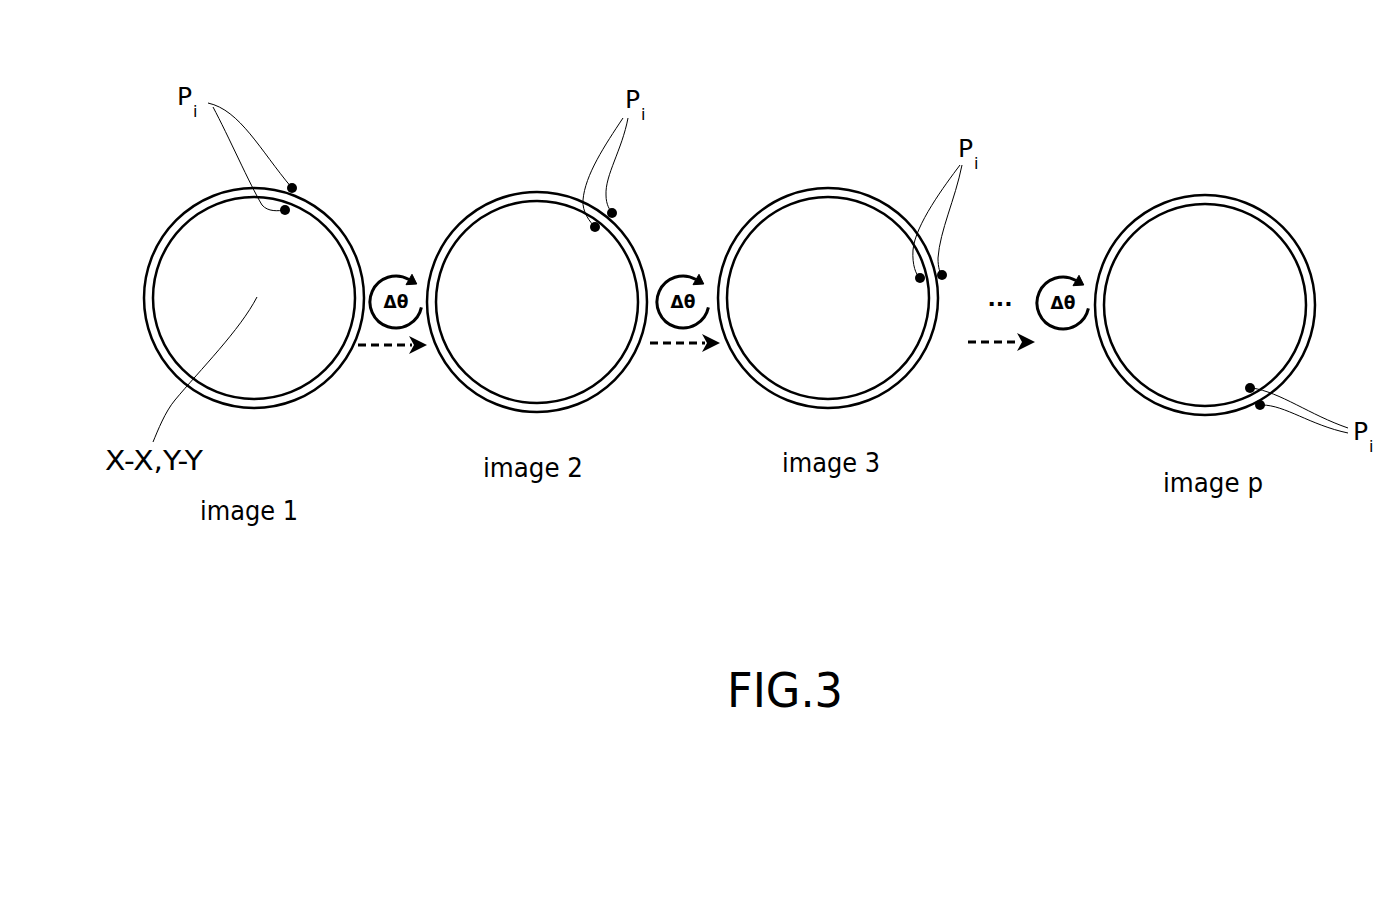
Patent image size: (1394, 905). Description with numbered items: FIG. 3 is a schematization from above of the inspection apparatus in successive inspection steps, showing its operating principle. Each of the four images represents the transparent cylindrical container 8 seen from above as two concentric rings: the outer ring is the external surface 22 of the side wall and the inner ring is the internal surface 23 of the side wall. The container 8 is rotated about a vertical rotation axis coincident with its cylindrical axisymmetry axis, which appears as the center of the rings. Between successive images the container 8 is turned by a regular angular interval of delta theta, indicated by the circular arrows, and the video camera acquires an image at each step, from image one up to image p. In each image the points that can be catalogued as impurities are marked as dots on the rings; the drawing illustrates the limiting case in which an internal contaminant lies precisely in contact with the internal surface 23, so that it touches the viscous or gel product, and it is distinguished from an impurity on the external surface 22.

The cylindrical container 8 is at (172, 223).
The external surface 22 is at (787, 188).
The internal surface 23 is at (820, 207).